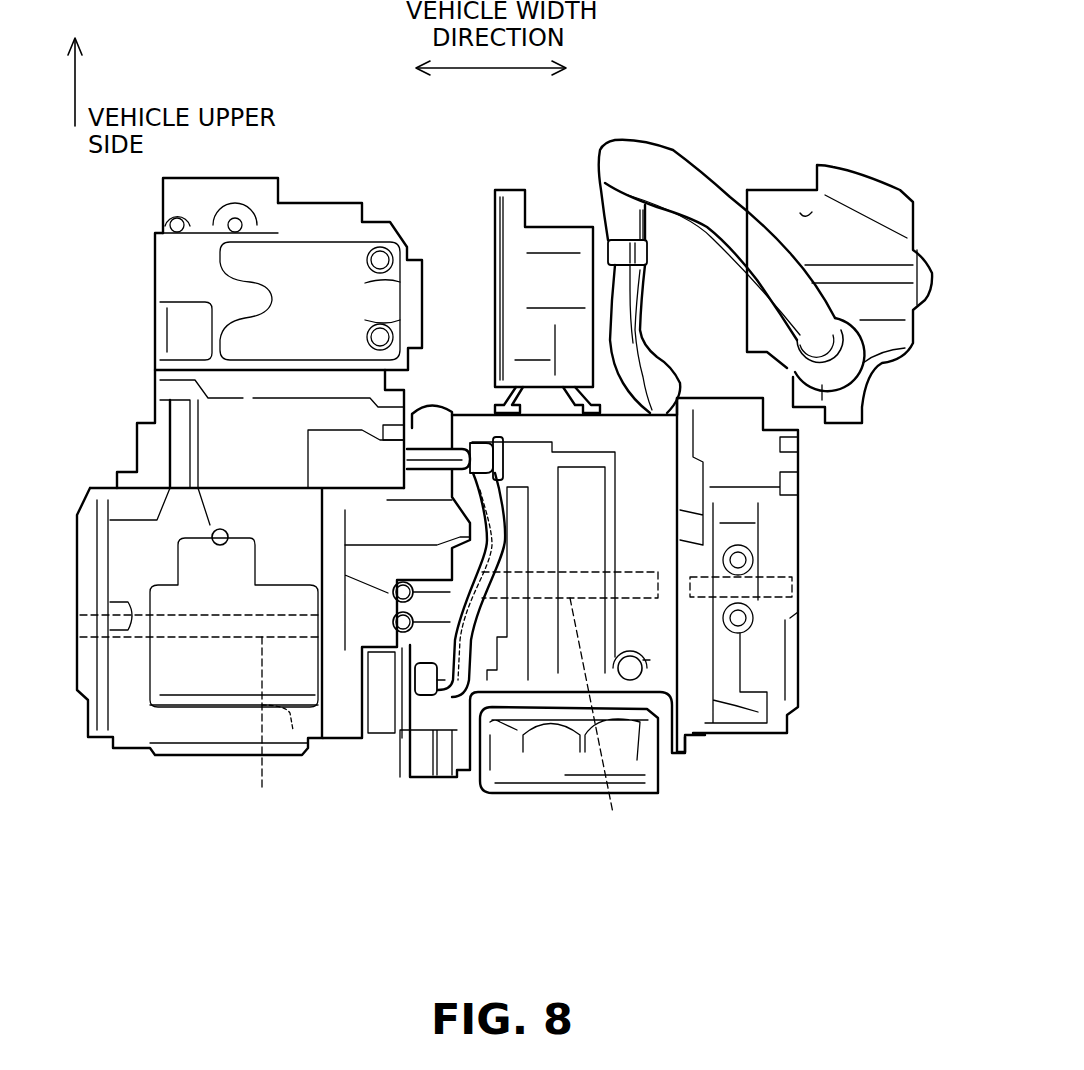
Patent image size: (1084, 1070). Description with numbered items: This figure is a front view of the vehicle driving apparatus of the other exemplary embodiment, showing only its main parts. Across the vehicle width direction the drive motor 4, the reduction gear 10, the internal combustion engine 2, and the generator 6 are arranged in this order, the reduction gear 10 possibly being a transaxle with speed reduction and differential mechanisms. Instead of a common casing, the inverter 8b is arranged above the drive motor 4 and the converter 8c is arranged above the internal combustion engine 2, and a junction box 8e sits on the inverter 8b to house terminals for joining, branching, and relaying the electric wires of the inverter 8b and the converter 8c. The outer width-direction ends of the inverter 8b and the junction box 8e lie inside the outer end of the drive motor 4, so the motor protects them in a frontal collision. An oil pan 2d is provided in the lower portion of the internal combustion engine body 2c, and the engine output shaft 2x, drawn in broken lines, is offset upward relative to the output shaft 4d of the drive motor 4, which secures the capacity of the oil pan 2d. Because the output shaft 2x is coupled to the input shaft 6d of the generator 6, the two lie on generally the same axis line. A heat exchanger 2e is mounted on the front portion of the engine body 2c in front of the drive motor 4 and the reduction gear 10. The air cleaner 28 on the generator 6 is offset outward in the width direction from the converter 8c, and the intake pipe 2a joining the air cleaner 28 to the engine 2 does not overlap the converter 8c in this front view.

The internal combustion engine 2 is at (641, 858).
The intake pipe 2a is at (648, 143).
The internal combustion engine body 2c is at (660, 672).
The oil pan 2d is at (552, 793).
The heat exchanger 2e is at (422, 720).
The output shaft 2x is at (600, 726).
The drive motor 4 is at (198, 758).
The output shaft 4d is at (266, 729).
The generator 6 is at (784, 733).
The input shaft 6d is at (792, 587).
The inverter 8b is at (155, 383).
The converter 8c is at (510, 190).
The junction box 8e is at (163, 224).
The reduction gear 10 is at (355, 738).
The air cleaner 28 is at (790, 190).